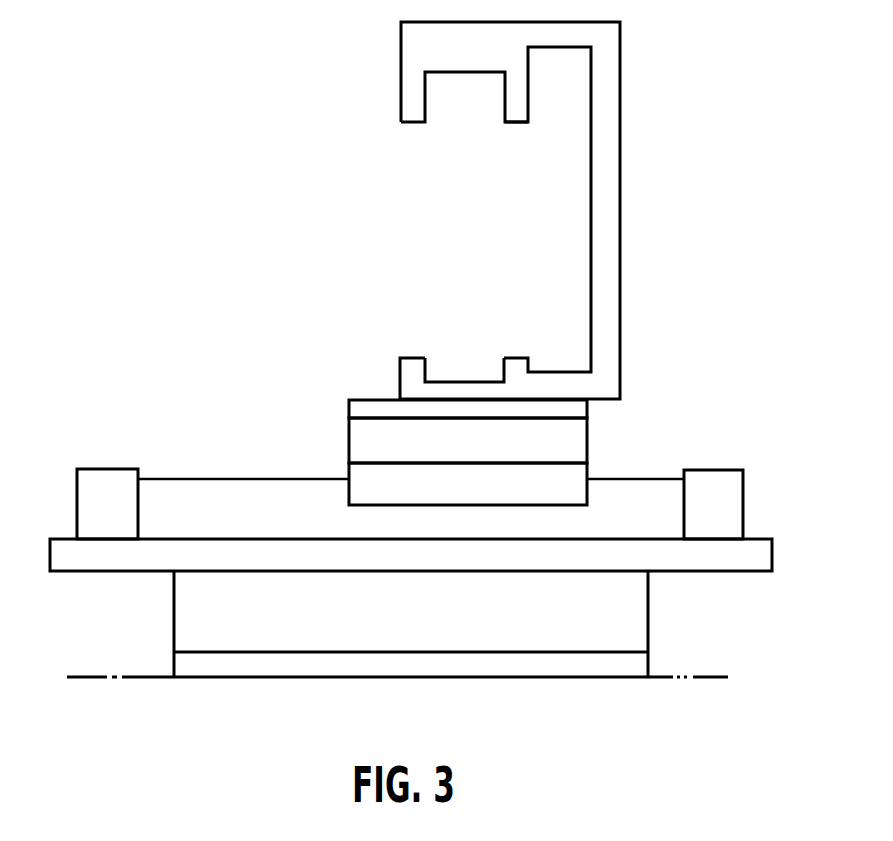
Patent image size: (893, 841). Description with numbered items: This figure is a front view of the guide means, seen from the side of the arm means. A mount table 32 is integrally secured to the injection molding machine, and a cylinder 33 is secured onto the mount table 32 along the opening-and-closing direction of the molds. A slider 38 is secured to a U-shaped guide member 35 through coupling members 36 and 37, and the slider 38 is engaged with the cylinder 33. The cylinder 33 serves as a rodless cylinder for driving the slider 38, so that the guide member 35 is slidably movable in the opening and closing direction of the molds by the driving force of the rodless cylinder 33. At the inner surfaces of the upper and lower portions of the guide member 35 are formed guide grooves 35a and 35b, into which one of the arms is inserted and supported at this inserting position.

The mount table 32 is at (684, 558).
The cylinder 33 is at (652, 492).
The guide member 35 is at (606, 155).
The guide groove 35a is at (425, 103).
The guide groove 35b is at (428, 373).
The coupling member 36 is at (580, 411).
The coupling member 37 is at (580, 441).
The slider 38 is at (355, 476).